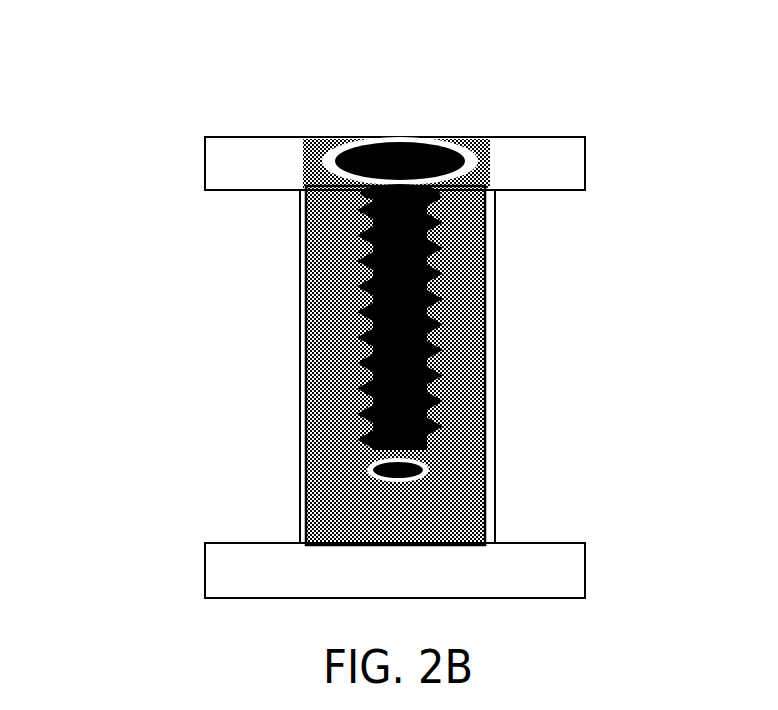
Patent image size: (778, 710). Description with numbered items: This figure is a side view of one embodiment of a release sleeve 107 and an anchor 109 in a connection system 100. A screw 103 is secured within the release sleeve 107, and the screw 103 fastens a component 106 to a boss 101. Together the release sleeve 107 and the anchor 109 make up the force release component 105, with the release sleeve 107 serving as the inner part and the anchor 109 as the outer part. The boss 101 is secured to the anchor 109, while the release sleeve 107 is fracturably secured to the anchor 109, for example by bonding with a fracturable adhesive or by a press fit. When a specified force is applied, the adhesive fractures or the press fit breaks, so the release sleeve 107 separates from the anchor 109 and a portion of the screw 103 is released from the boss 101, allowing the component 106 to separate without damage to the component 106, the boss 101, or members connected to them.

The connection system 100 is at (377, 341).
The boss 101 is at (540, 575).
The screw 103 is at (419, 140).
The force release component 105 is at (395, 365).
The component 106 is at (267, 163).
The release sleeve 107 is at (457, 215).
The anchor 109 is at (472, 507).